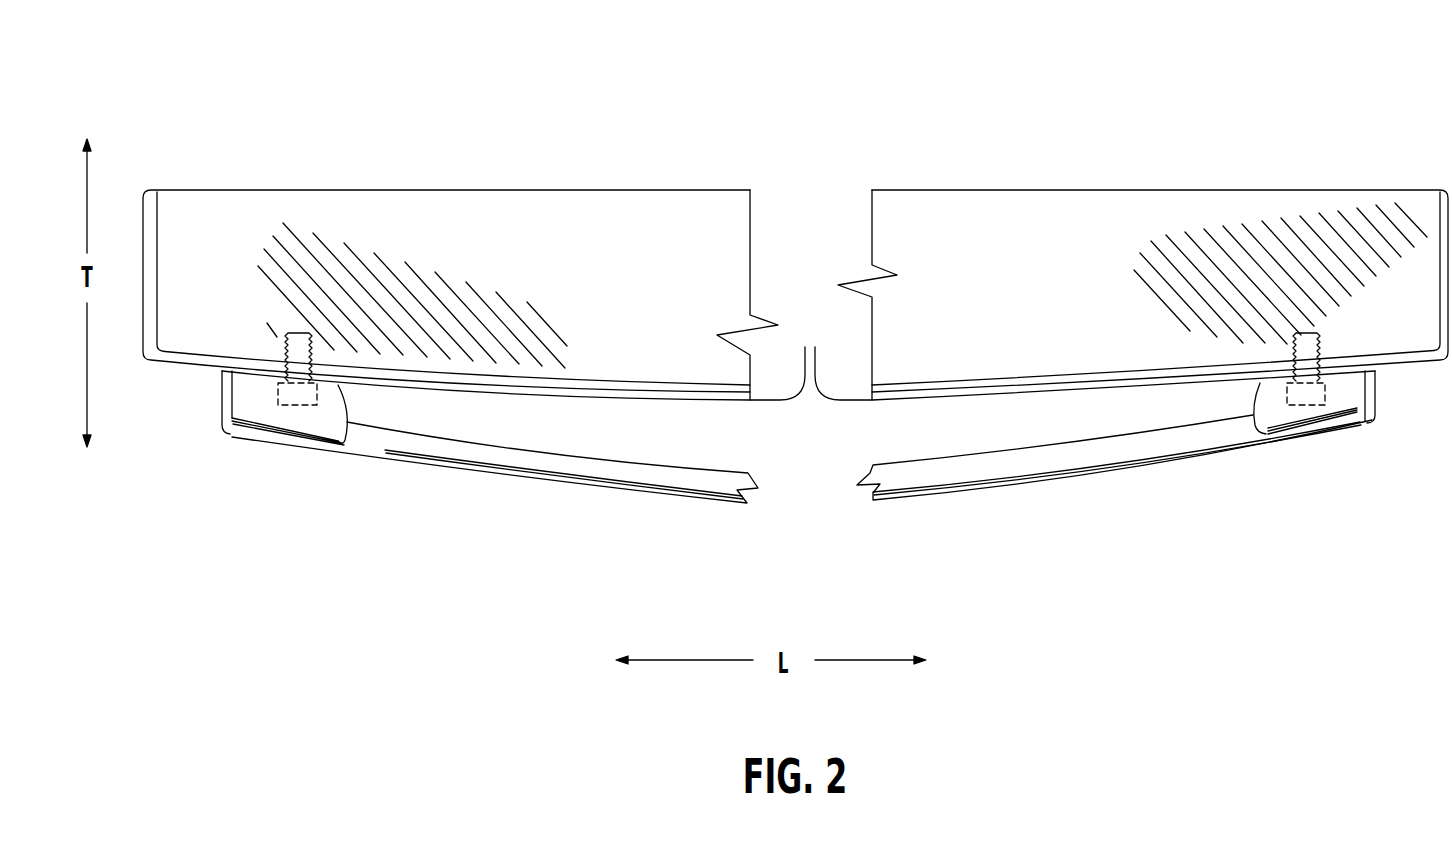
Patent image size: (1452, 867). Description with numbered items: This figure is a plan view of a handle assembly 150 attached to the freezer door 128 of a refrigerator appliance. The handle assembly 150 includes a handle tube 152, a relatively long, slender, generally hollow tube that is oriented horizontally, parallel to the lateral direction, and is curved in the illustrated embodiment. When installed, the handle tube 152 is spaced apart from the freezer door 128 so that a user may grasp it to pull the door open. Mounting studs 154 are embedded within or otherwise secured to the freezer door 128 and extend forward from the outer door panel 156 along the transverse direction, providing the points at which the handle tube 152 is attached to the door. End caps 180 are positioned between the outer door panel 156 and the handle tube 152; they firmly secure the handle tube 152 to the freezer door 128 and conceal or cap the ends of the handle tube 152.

The freezer door 128 is at (917, 213).
The handle assembly 150 is at (810, 547).
The handle tube 152 is at (1010, 477).
The mounting stud 154 is at (299, 333).
The outer door panel 156 is at (798, 357).
The end cap 180 is at (268, 410).